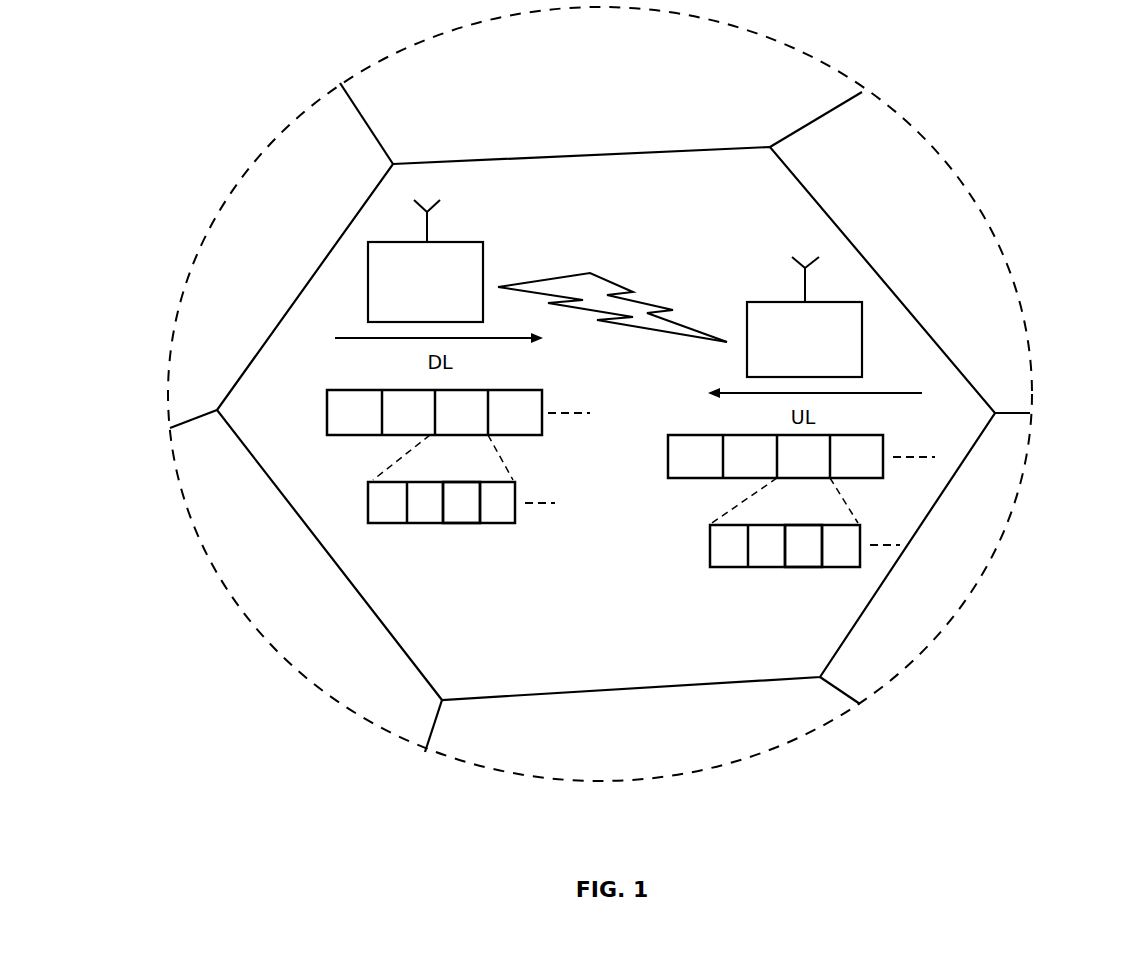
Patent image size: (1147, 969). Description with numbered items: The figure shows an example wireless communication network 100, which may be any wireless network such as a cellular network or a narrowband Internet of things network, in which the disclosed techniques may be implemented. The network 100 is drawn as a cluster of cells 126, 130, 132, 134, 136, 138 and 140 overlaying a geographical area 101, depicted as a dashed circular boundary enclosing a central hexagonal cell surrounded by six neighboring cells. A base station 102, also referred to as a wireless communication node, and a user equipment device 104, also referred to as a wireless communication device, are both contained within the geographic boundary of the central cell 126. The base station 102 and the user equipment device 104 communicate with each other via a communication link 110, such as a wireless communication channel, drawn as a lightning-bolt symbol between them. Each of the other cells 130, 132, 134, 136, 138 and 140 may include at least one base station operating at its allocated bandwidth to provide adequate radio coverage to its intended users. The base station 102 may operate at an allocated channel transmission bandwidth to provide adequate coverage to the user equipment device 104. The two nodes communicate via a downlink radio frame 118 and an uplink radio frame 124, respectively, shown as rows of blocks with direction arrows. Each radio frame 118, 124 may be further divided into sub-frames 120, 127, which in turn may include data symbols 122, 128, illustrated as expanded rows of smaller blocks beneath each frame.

The wireless communication network 100 is at (602, 394).
The geographical area 101 is at (190, 262).
The base station 102 is at (425, 261).
The user equipment device 104 is at (804, 317).
The communication link 110 is at (602, 283).
The downlink radio frame 118 is at (335, 413).
The sub-frame 120 is at (368, 510).
The data symbol 122 is at (464, 519).
The uplink radio frame 124 is at (677, 457).
The cell 126 is at (606, 423).
The sub-frame 127 is at (715, 557).
The data symbol 128 is at (807, 566).
The cell 130 is at (316, 172).
The cell 132 is at (722, 112).
The cell 134 is at (966, 323).
The cell 136 is at (889, 634).
The cell 138 is at (544, 726).
The cell 140 is at (237, 505).